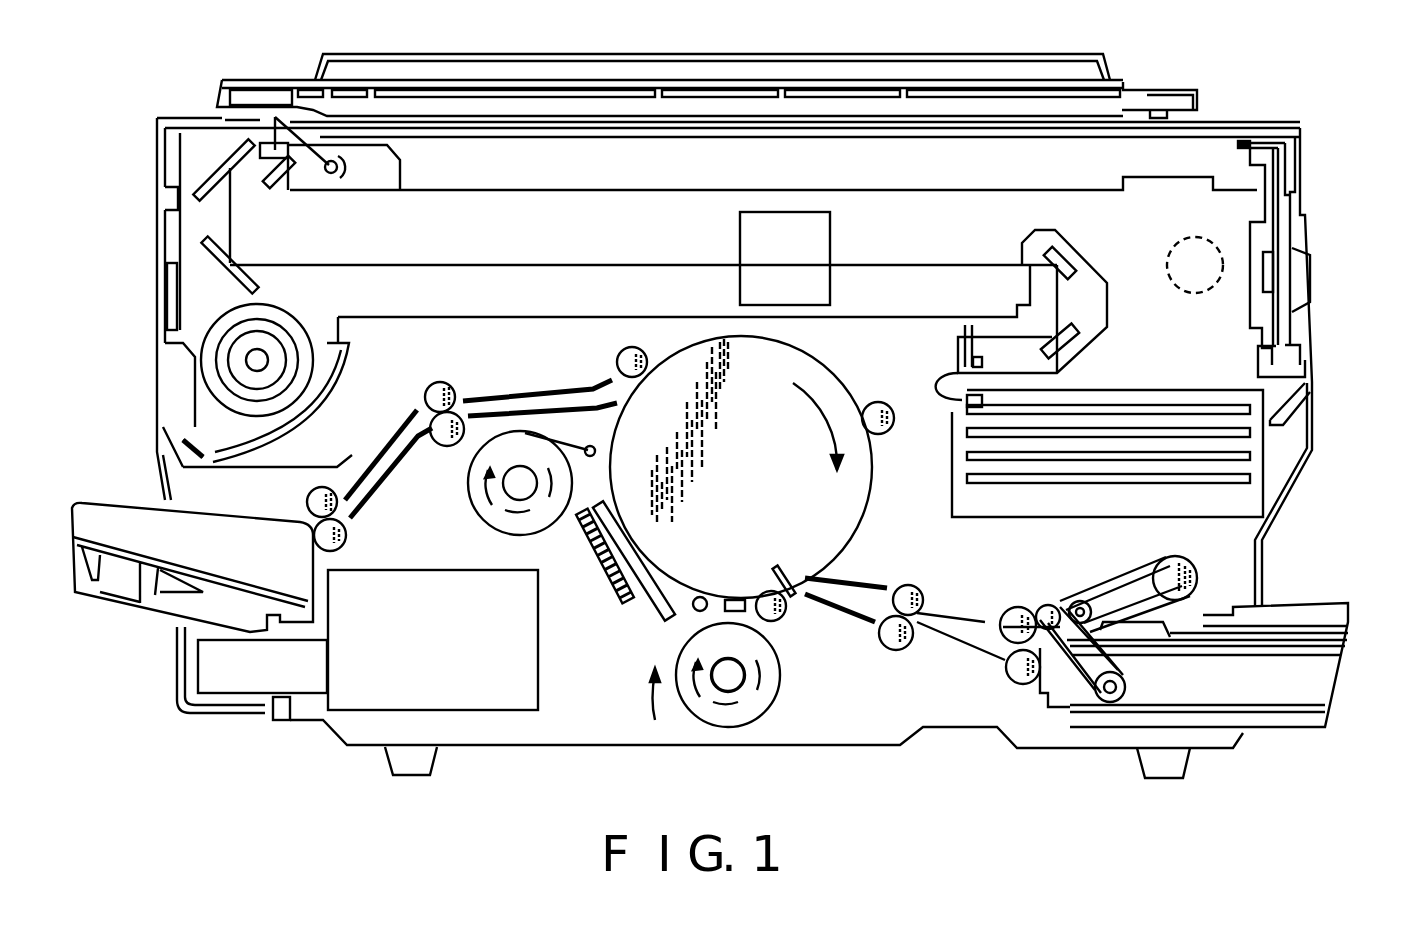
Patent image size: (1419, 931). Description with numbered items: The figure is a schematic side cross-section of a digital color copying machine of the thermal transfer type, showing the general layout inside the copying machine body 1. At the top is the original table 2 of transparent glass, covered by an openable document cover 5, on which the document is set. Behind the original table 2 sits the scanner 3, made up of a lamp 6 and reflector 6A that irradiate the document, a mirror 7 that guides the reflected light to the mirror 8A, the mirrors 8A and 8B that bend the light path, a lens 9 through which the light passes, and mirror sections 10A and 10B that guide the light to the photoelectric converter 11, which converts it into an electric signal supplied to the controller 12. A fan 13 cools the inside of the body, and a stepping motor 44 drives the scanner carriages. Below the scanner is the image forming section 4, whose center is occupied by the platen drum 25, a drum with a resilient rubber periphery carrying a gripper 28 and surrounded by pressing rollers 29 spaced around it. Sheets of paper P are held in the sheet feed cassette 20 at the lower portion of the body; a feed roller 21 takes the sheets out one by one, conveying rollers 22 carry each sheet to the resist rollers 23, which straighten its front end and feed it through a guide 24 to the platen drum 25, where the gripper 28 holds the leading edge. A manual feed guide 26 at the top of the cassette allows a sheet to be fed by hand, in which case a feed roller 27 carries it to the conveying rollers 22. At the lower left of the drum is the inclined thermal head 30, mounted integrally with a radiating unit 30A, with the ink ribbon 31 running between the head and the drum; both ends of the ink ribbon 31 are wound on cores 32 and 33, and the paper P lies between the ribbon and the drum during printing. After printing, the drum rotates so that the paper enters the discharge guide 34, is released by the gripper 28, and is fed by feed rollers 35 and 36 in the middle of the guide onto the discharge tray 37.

The copying machine body 1 is at (1316, 125).
The original table 2 is at (540, 120).
The scanner 3 is at (207, 141).
The image forming section 4 is at (659, 708).
The document cover 5 is at (962, 78).
The lamp 6 is at (338, 163).
The reflector 6A is at (350, 172).
The mirror 7 is at (284, 187).
The mirror 8A is at (208, 182).
The mirror 8B is at (233, 270).
The lens 9 is at (832, 230).
The mirror section 10A is at (1072, 256).
The mirror section 10B is at (1076, 346).
The photoelectric converter 11 is at (984, 360).
The controller 12 is at (1263, 500).
The fan 13 is at (268, 347).
The sheet feed cassette 20 is at (1330, 700).
The feed roller 21 is at (1125, 685).
The conveying rollers 22 is at (1011, 607).
The resist rollers 23 is at (921, 594).
The guide 24 is at (867, 626).
The platen drum 25 is at (852, 540).
The manual feed guide 26 is at (1307, 607).
The feed roller 27 is at (1190, 566).
The gripper 28 is at (790, 570).
The pressing rollers 29 is at (626, 360).
The thermal head 30 is at (656, 606).
The radiating unit 30A is at (607, 540).
The ink ribbon 31 is at (782, 690).
The core 32 is at (505, 510).
The core 33 is at (745, 690).
The discharge guide 34 is at (512, 397).
The feed rollers 35 is at (430, 392).
The feed rollers 36 is at (307, 502).
The discharge tray 37 is at (133, 538).
The stepping motor 44 is at (1196, 294).
The paper P is at (1315, 662).